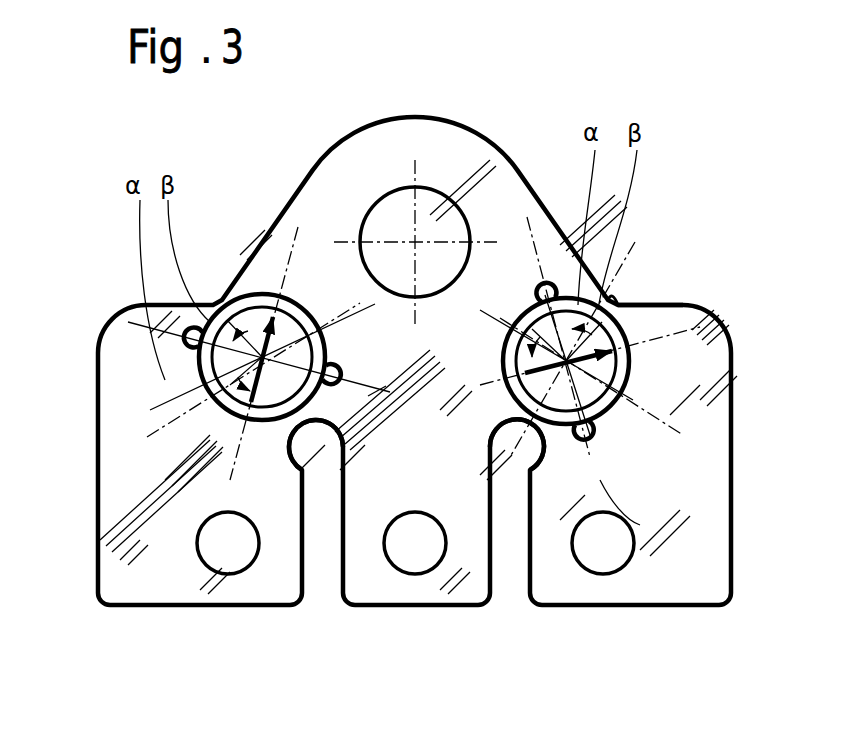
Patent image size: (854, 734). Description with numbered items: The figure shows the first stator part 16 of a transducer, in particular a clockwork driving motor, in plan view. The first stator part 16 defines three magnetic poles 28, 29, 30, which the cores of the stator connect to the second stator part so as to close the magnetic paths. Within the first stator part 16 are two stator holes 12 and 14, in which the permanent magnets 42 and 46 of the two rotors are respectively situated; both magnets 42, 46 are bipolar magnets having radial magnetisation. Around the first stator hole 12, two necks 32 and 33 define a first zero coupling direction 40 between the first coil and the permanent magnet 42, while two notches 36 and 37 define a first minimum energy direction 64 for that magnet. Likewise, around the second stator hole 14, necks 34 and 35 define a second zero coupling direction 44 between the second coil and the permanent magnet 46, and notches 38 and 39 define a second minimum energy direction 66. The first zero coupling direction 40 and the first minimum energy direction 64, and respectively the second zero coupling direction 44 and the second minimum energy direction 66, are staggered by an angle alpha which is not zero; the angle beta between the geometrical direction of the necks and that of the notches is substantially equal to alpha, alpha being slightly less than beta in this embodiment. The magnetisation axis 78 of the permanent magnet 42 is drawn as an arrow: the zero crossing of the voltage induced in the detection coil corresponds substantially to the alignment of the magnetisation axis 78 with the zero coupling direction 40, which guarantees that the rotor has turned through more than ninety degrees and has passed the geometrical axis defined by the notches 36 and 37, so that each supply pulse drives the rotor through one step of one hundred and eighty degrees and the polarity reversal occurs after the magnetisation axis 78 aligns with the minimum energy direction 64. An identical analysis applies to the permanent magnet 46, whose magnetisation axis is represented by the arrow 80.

The first stator part 16 is at (418, 133).
The notch 37 is at (345, 363).
The neck 32 is at (233, 287).
The notch 36 is at (188, 352).
The stator hole 12 is at (227, 422).
The permanent magnet 42 is at (257, 317).
The first zero coupling direction 40 is at (160, 415).
The first minimum energy direction 64 is at (210, 440).
The magnetisation axis 78 is at (275, 420).
The magnetic pole 28 is at (167, 437).
The neck 33 is at (298, 432).
The neck 35 is at (532, 432).
The magnetic pole 29 is at (412, 455).
The stator opening 14 is at (637, 372).
The notch 38 is at (557, 288).
The notch 39 is at (573, 441).
The second minimum energy direction 66 is at (660, 340).
The second zero coupling direction 44 is at (672, 430).
The permanent magnet 46 is at (617, 293).
The neck 34 is at (642, 308).
The magnetic pole 30 is at (688, 398).
The magnetisation axis 80 is at (618, 432).